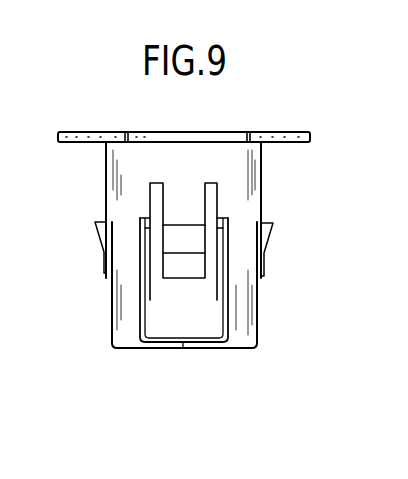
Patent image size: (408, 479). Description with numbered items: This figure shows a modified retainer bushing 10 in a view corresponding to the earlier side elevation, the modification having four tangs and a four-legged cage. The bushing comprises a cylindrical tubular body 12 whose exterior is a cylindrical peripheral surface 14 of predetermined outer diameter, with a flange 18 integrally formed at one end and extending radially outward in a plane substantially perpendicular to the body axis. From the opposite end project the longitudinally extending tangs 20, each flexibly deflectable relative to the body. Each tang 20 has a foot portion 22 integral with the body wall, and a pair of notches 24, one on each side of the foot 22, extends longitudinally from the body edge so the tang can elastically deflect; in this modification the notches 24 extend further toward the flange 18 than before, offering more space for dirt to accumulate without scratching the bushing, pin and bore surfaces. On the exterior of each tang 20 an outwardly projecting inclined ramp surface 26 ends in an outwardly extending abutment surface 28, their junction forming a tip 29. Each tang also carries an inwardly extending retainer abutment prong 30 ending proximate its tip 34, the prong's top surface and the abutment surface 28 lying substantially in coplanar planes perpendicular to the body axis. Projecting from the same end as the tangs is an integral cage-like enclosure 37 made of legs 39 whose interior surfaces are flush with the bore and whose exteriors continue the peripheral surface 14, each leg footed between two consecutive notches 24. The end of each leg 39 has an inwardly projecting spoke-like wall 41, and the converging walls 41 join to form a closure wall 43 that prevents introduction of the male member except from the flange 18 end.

The retainer bushing 10 is at (92, 179).
The cylindrical tubular body 12 is at (262, 172).
The cylindrical peripheral surface 14 is at (230, 203).
The flange 18 is at (87, 130).
The tang 20 is at (102, 256).
The foot portion 22 is at (175, 200).
The notch 24 is at (158, 183).
The inclined ramp surface 26 is at (97, 237).
The abutment surface 28 is at (188, 225).
The tip 29 is at (97, 220).
The retainer abutment prong 30 is at (211, 230).
The tip of retainer prong 34 is at (173, 265).
The cage-like enclosure 37 is at (254, 350).
The leg 39 is at (122, 326).
The spoke-like wall 41 is at (168, 346).
The closure wall 43 is at (178, 351).